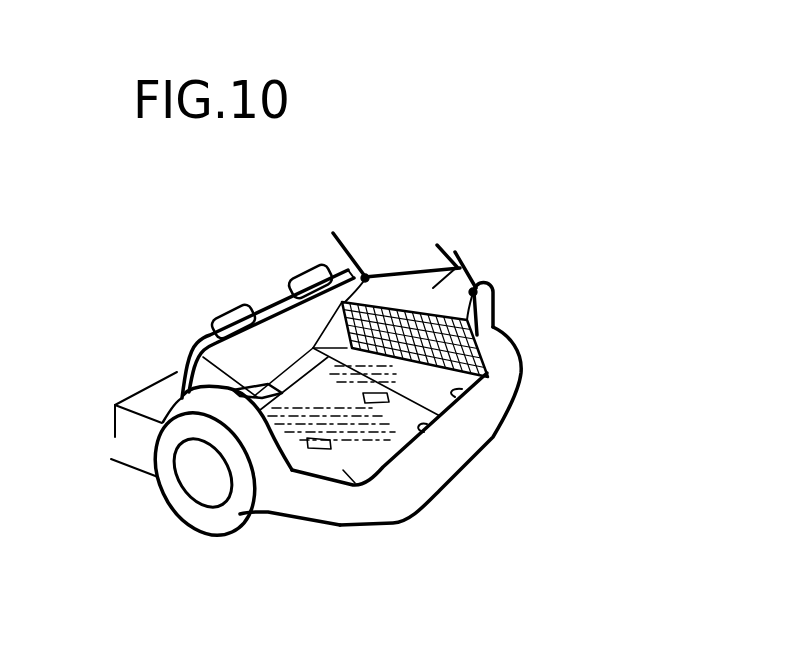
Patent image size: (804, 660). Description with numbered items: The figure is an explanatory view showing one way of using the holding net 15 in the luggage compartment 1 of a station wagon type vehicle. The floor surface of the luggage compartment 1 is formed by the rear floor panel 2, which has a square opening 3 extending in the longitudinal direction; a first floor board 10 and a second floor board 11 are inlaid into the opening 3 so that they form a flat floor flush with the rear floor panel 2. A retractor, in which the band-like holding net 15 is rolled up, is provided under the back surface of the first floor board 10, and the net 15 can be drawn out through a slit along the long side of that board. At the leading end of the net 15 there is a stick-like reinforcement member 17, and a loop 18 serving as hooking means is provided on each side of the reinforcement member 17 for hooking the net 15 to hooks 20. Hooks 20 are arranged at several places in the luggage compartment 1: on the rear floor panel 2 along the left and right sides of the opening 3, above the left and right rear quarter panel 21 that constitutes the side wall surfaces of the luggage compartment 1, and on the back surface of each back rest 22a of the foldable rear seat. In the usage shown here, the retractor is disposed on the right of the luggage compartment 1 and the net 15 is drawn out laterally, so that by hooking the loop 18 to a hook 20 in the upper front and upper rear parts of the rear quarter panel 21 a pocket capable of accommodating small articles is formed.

The luggage compartment 1 is at (196, 342).
The rear floor panel 2 is at (347, 472).
The square opening 3 is at (452, 395).
The first floor board 10 is at (478, 390).
The second floor board 11 is at (387, 441).
The holding net 15 is at (500, 338).
The reinforcement member 17 is at (474, 278).
The loop 18 is at (373, 290).
The hook 20 is at (366, 274).
The rear quarter panel 21 is at (436, 308).
The back rest 22a is at (275, 298).